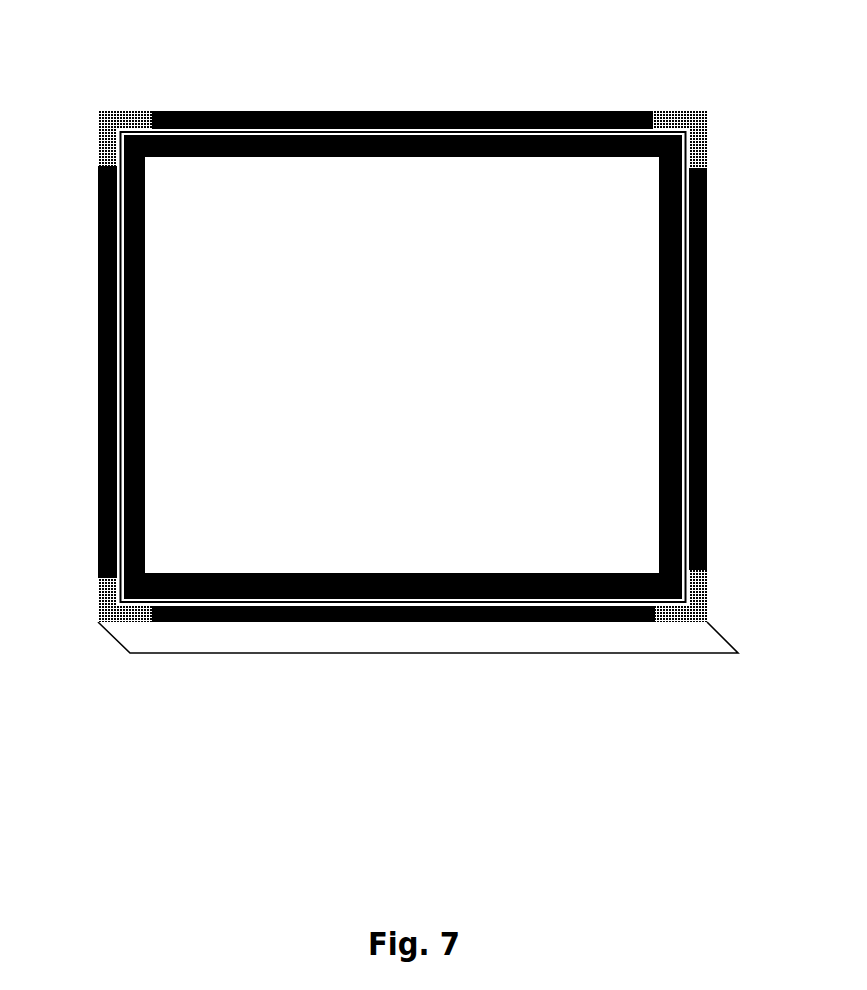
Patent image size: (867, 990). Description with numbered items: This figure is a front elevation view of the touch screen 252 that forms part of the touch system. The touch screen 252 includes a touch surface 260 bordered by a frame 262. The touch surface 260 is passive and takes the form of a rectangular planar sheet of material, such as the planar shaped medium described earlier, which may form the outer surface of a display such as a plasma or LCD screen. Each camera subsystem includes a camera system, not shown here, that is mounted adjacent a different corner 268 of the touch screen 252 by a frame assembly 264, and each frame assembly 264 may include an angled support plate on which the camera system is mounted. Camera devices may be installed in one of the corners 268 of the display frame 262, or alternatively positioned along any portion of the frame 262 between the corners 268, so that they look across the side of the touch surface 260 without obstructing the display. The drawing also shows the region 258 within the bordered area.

The touch screen 252 is at (422, 361).
The display panel 258 is at (500, 249).
The touch surface 260 is at (402, 365).
The frame 262 is at (709, 416).
The frame assembly 264 is at (270, 111).
The corner 268 is at (110, 122).